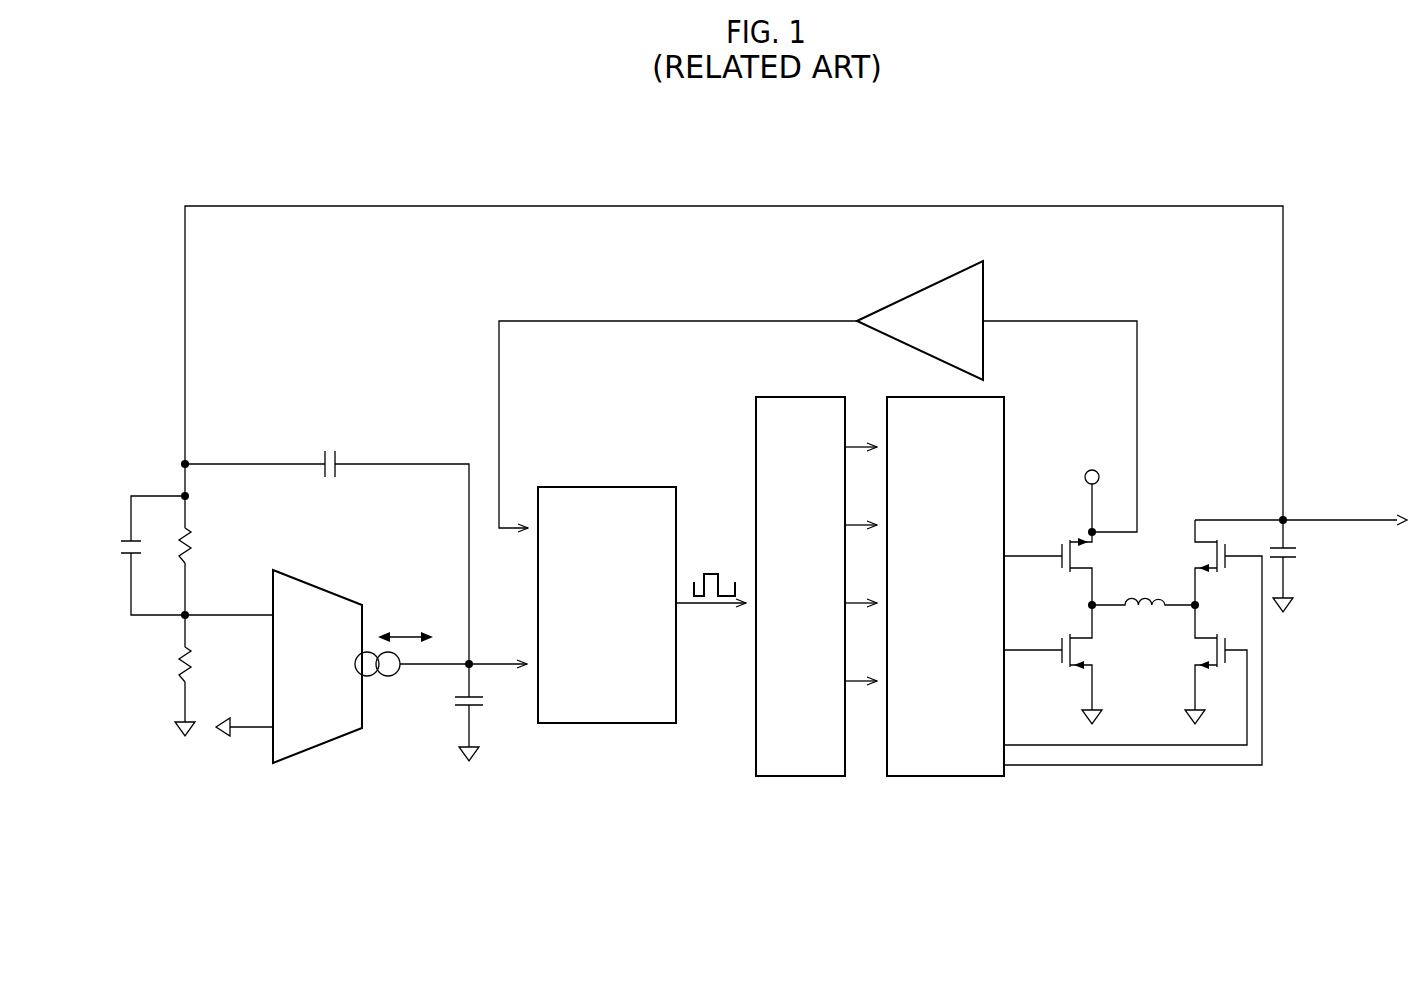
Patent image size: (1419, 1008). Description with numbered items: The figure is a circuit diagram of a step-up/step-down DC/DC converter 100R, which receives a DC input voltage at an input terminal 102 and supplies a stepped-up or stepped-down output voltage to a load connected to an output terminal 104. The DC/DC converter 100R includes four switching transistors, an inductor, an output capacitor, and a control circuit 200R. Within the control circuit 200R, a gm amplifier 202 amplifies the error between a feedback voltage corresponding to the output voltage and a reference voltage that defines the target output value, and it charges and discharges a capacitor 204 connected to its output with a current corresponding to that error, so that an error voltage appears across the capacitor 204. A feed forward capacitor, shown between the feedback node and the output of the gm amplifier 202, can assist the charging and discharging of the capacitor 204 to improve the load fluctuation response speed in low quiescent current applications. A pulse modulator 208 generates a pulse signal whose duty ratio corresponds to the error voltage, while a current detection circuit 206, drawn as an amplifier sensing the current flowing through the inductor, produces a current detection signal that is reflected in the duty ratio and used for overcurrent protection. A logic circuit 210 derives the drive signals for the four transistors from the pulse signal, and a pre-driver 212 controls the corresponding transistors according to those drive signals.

The DC/DC converter 100R is at (1308, 177).
The input terminal 102 is at (1085, 473).
The output terminal 104 is at (1382, 518).
The control circuit 200R is at (1015, 850).
The gm amplifier 202 is at (321, 750).
The capacitor 204 is at (448, 705).
The current detection circuit 206 is at (910, 296).
The pulse modulator 208 is at (602, 723).
The logic circuit 210 is at (797, 776).
The pre-driver 212 is at (943, 776).